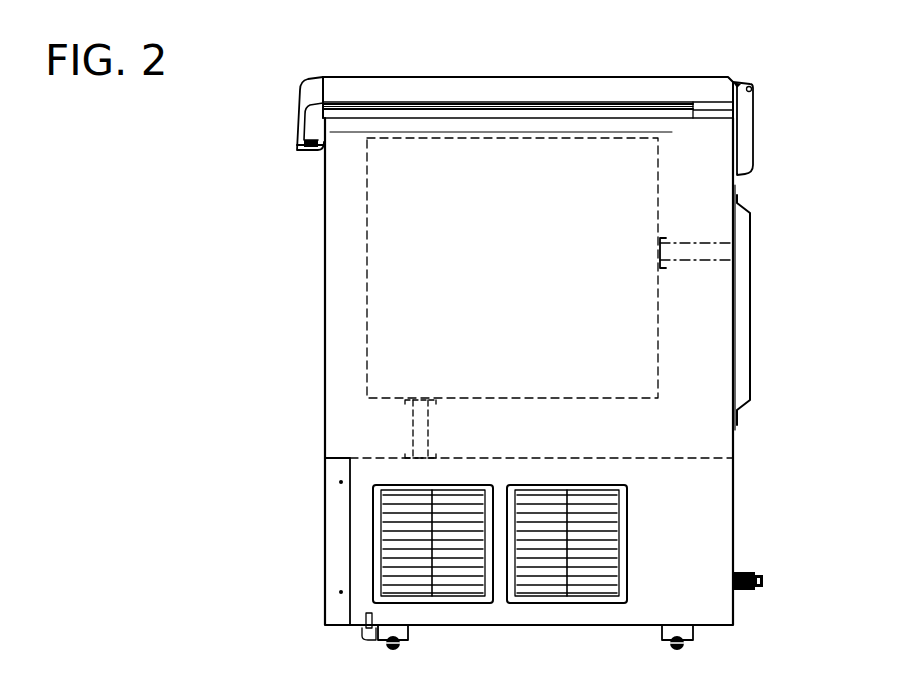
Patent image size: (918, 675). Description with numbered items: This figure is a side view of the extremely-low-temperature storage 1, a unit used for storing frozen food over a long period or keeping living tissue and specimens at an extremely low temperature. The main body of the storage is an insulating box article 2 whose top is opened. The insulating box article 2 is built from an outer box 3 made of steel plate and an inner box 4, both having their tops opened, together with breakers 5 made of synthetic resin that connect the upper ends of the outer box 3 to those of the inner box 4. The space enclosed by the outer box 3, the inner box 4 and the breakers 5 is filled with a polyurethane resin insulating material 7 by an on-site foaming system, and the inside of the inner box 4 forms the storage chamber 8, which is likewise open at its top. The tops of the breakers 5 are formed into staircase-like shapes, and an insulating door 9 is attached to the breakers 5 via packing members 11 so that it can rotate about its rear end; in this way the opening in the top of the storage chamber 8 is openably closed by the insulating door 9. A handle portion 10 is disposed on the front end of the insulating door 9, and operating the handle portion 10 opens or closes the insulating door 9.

The extremely-low-temperature storage 1 is at (526, 331).
The insulating box article 2 is at (700, 212).
The outer box 3 is at (734, 526).
The inner box 4 is at (660, 345).
The breakers 5 is at (356, 125).
The insulating material 7 is at (708, 447).
The storage chamber 8 is at (513, 288).
The insulating door 9 is at (531, 87).
The handle portion 10 is at (302, 104).
The packing members 11 is at (372, 140).